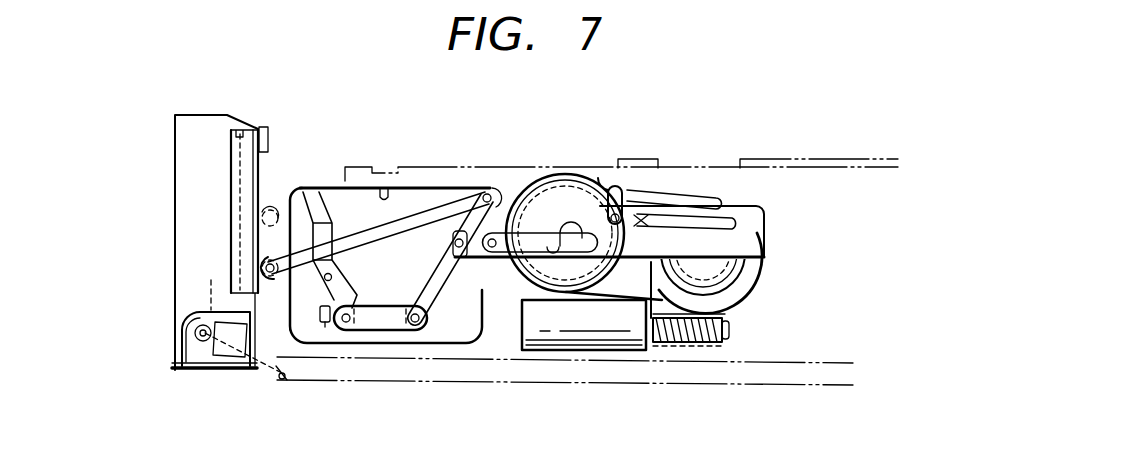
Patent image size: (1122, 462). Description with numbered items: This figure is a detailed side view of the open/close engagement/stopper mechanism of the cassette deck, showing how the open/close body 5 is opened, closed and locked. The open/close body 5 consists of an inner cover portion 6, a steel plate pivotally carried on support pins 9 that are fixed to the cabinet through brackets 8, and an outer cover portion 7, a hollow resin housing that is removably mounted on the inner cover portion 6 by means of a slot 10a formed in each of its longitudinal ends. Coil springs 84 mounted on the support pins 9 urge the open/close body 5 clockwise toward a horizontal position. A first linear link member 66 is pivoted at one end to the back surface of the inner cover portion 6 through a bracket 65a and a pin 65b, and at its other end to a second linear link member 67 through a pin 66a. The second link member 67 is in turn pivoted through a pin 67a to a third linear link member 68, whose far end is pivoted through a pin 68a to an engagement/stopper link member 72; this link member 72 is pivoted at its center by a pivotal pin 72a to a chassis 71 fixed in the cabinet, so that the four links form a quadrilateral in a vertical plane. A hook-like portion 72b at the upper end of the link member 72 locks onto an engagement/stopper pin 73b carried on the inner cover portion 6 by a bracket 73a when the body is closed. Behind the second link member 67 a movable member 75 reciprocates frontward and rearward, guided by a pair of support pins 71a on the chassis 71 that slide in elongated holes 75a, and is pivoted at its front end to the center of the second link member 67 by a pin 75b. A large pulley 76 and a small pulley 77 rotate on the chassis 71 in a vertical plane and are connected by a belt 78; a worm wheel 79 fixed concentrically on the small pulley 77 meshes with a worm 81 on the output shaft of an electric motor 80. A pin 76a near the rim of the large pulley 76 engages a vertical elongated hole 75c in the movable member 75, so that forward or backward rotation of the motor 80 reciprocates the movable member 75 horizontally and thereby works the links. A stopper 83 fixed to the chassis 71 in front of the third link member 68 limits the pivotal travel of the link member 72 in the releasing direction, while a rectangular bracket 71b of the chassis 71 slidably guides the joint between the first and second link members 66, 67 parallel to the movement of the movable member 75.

The open/close body 5 is at (168, 208).
The inner cover portion 6 is at (243, 176).
The outer cover portion 7 is at (190, 145).
The bracket 8 is at (232, 357).
The support pin 9 is at (205, 357).
The slot 10a is at (233, 142).
The bracket 65a is at (255, 262).
The pin 65b is at (262, 275).
The first linear link member 66 is at (432, 188).
The pin 66a is at (490, 195).
The second linear link member 67 is at (440, 300).
The pin 67a is at (413, 324).
The third linear link member 68 is at (378, 322).
The pin 68a is at (348, 328).
The chassis 71 is at (793, 173).
The support pin 71a is at (655, 205).
The bracket 71b is at (383, 187).
The engagement/stopper link member 72 is at (331, 192).
The pivotal pin 72a is at (302, 302).
The hook-like portion 72b is at (298, 192).
The bracket 73a is at (330, 248).
The engagement/stopper pin 73b is at (250, 246).
The movable member 75 is at (635, 247).
The elongated hole 75a is at (682, 225).
The pin 75b is at (482, 300).
The elongated hole 75c is at (602, 178).
The large pulley 76 is at (550, 200).
The pin 76a is at (575, 205).
The small pulley 77 is at (720, 215).
The belt 78 is at (592, 315).
The worm wheel 79 is at (740, 345).
The electric motor 80 is at (648, 345).
The worm 81 is at (684, 344).
The stopper 83 is at (326, 326).
The coil spring 84 is at (270, 374).